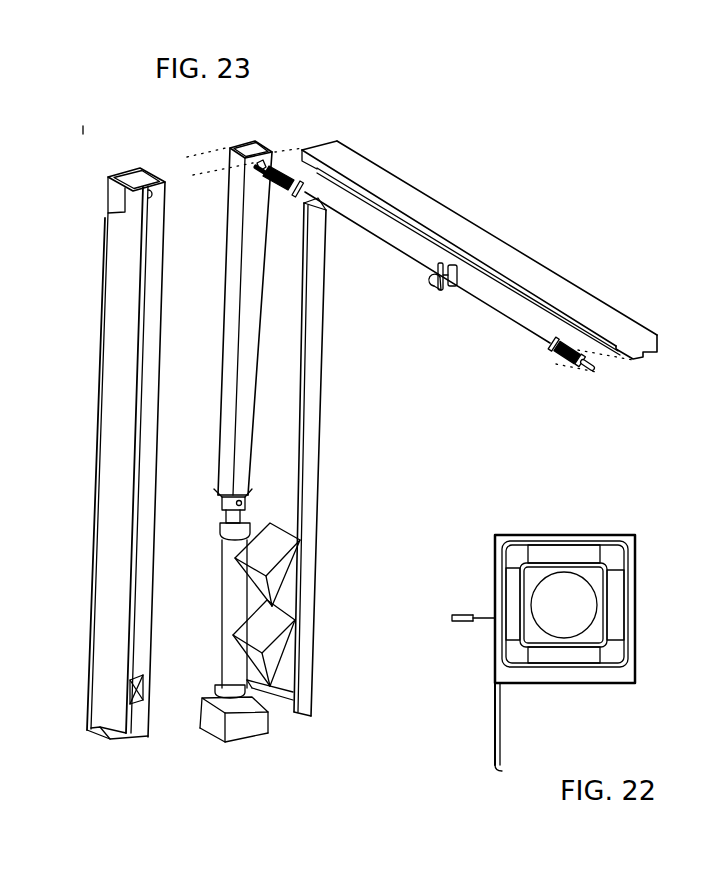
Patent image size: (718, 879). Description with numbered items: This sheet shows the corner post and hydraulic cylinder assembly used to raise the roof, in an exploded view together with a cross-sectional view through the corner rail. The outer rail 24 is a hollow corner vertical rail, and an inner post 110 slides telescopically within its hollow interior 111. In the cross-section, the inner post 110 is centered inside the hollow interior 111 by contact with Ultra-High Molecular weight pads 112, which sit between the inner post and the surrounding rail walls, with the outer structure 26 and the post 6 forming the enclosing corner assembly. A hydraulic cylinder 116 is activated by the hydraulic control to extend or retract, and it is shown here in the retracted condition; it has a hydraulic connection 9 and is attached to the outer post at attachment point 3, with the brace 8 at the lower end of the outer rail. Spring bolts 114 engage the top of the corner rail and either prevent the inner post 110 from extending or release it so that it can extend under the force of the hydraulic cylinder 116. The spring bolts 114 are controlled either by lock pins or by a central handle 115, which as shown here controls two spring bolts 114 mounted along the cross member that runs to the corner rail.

In FIG. 23, the outer post attachment point 3 is at (222, 520).
In FIG. 23, the outer post 6 is at (103, 271).
In FIG. 23, the cross brace 8 is at (144, 691).
In FIG. 23, the hydraulic connection 9 is at (233, 684).
In FIG. 23, the outer rail 24 is at (107, 191).
In FIG. 22, the outer rail 24 is at (555, 541).
In FIG. 22, the outer frame tube 26 is at (487, 655).
In FIG. 23, the inner post 110 is at (237, 340).
In FIG. 22, the inner post 110 is at (566, 649).
In FIG. 23, the hollow interior 111 is at (137, 175).
In FIG. 22, the Ultra-High Molecular weight pad 112 is at (562, 555).
In FIG. 23, the spring bolt 114 is at (262, 178).
In FIG. 23, the central handle 115 is at (426, 300).
In FIG. 23, the hydraulic cylinder 116 is at (226, 570).
In FIG. 22, the hydraulic cylinder 116 is at (607, 597).